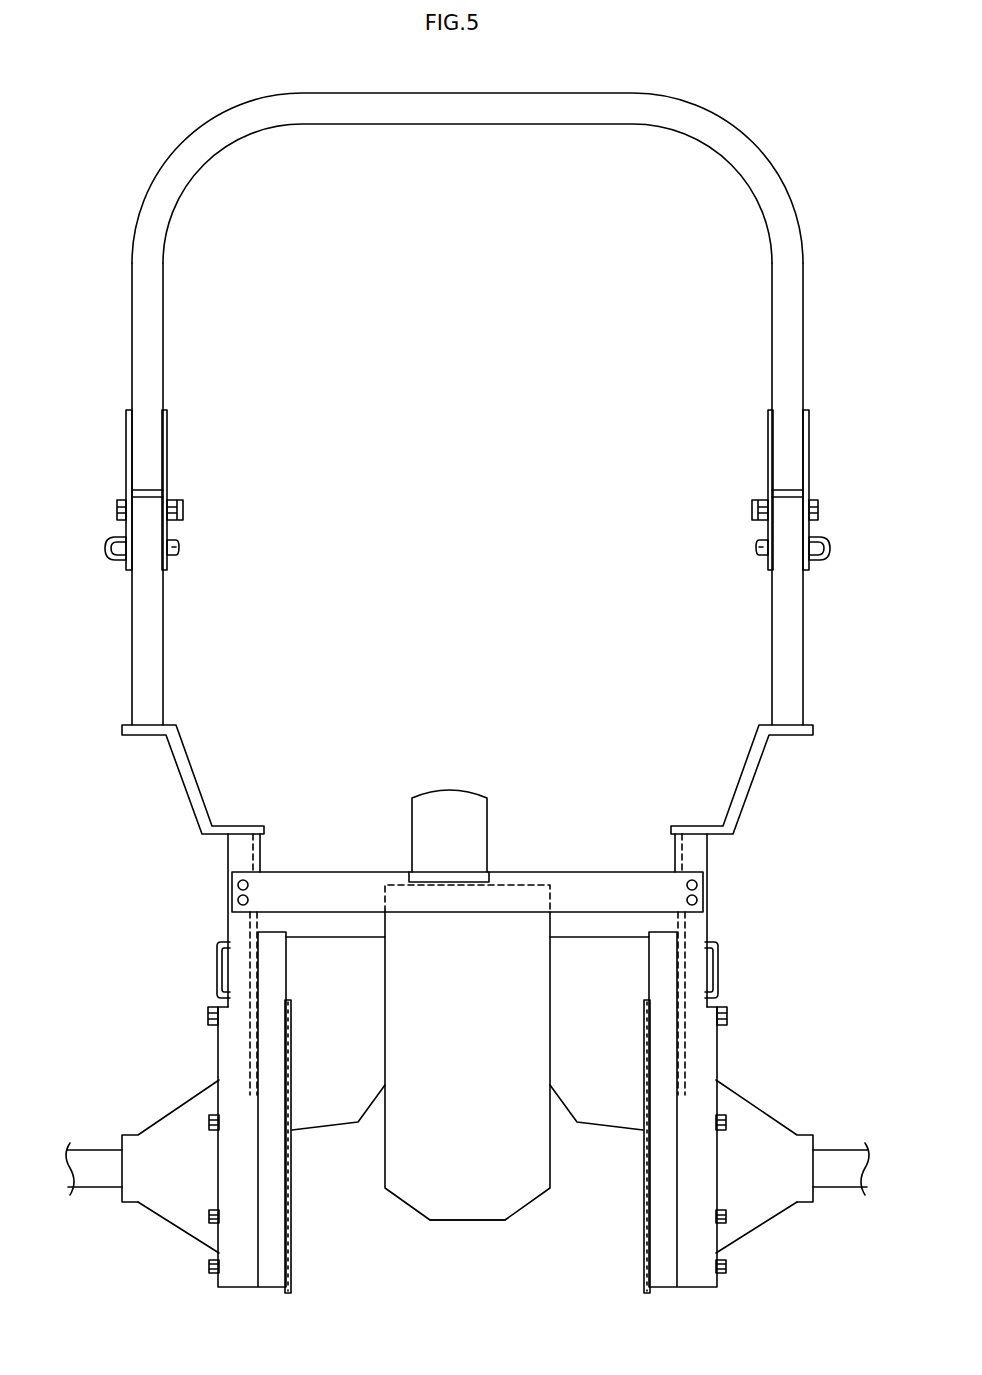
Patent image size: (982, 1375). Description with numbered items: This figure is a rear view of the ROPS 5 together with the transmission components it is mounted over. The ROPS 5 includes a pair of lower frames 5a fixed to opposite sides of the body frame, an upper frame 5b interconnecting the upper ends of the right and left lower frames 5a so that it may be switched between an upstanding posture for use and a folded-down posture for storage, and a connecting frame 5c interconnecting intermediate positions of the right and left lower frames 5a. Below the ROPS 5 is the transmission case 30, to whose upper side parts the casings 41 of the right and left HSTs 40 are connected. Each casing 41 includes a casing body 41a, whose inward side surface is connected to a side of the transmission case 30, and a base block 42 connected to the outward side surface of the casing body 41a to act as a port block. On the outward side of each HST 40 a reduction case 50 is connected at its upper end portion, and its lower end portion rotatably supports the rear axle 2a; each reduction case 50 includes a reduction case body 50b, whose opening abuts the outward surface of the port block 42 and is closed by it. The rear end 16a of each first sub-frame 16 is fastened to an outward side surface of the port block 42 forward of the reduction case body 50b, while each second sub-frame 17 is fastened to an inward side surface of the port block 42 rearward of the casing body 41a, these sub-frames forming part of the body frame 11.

The ROPS 5 is at (466, 594).
The lower frame 5a is at (132, 706).
The upper frame 5b is at (463, 117).
The connecting frame 5c is at (530, 872).
The HST 40 is at (343, 927).
The casing 41 is at (467, 1102).
The casing body 41a is at (363, 1035).
The base block 42 is at (276, 1242).
The first sub-frame 16 is at (459, 1028).
The rear end 16a is at (245, 1042).
The frame 11 is at (467, 1070).
The second sub-frame 17 is at (292, 1143).
The reduction case 50 is at (468, 1175).
The reduction case body 50b is at (195, 1225).
The rear axle 2a is at (90, 1180).
The transmission case 30 is at (474, 1227).